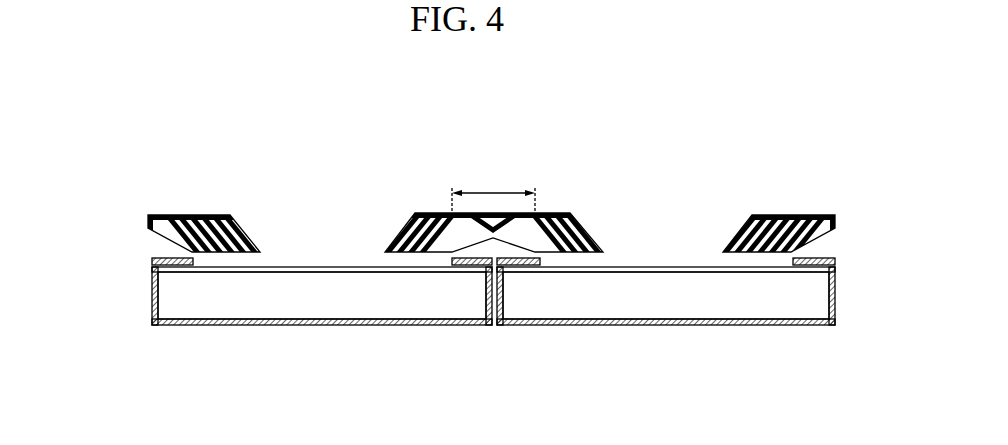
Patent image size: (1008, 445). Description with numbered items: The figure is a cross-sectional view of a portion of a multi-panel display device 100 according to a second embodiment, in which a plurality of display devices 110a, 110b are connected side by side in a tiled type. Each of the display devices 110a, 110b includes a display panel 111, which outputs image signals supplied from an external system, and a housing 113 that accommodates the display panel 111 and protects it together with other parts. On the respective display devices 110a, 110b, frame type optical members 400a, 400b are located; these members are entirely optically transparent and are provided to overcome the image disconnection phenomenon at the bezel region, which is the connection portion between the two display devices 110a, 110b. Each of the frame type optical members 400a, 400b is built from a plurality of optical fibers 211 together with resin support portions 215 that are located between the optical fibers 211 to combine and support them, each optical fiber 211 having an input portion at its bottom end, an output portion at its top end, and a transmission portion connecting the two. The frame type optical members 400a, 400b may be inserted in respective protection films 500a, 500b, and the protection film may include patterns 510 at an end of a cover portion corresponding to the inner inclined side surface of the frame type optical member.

The multi-panel display device 100 is at (789, 149).
The display device 110a is at (235, 347).
The display device 110b is at (757, 348).
The display panel 111 is at (317, 300).
The housing 113 is at (362, 326).
The optical fibers 211 is at (183, 213).
The resin support portions 215 is at (190, 213).
The frame type optical member 400a is at (132, 222).
The frame type optical member 400b is at (836, 204).
The protection film 500a is at (167, 239).
The protection film 500b is at (816, 240).
The patterns 510 is at (603, 242).